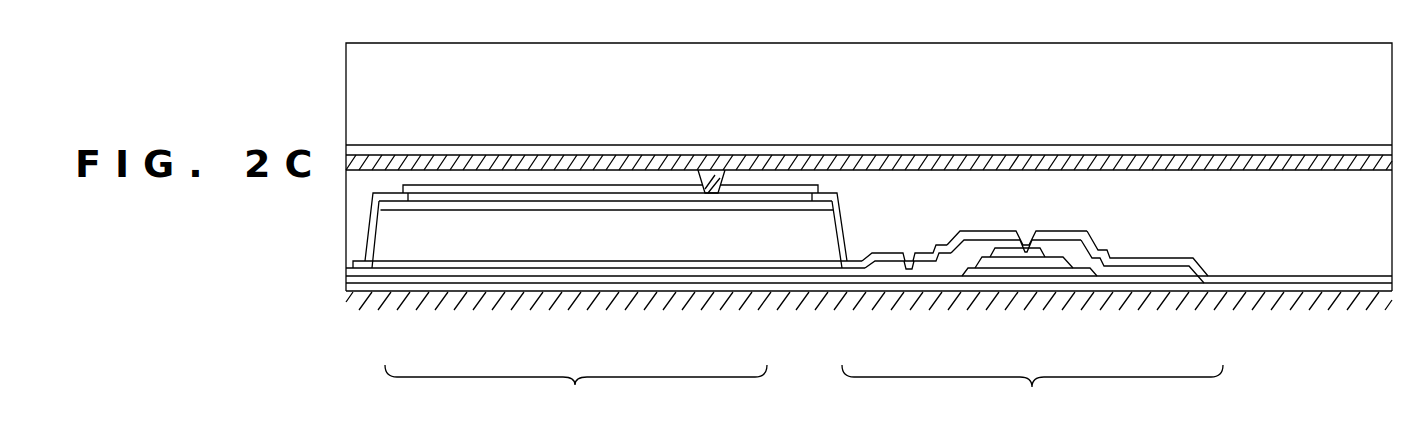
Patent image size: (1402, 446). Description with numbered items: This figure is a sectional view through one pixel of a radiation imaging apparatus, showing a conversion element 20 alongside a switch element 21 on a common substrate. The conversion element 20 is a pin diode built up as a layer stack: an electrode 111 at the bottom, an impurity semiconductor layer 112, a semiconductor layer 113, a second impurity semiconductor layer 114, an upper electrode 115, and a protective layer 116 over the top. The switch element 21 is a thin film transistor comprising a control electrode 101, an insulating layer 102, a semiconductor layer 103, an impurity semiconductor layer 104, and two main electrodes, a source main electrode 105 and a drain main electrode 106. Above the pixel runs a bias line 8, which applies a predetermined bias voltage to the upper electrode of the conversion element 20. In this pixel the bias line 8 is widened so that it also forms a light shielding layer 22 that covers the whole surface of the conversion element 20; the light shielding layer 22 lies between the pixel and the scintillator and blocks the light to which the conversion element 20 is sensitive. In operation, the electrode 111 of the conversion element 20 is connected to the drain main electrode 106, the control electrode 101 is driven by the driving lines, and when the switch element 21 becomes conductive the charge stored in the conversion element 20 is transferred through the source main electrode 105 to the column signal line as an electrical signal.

The bias line 8 is at (702, 173).
The light shielding layer 22 is at (971, 163).
The conversion element 20 is at (576, 393).
The switch element 21 is at (1032, 393).
The electrode 111 is at (417, 277).
The impurity semiconductor layer 112 is at (476, 268).
The semiconductor layer 113 is at (538, 248).
The impurity semiconductor layer 114 is at (600, 207).
The electrode 115 is at (648, 198).
The protective layer 116 is at (690, 188).
The control electrode 101 is at (1032, 284).
The insulating layer 102 is at (1118, 287).
The semiconductor layer 103 is at (982, 275).
The impurity semiconductor layer 104 is at (967, 278).
The main electrode 105 is at (1187, 275).
The main electrode 106 is at (897, 277).